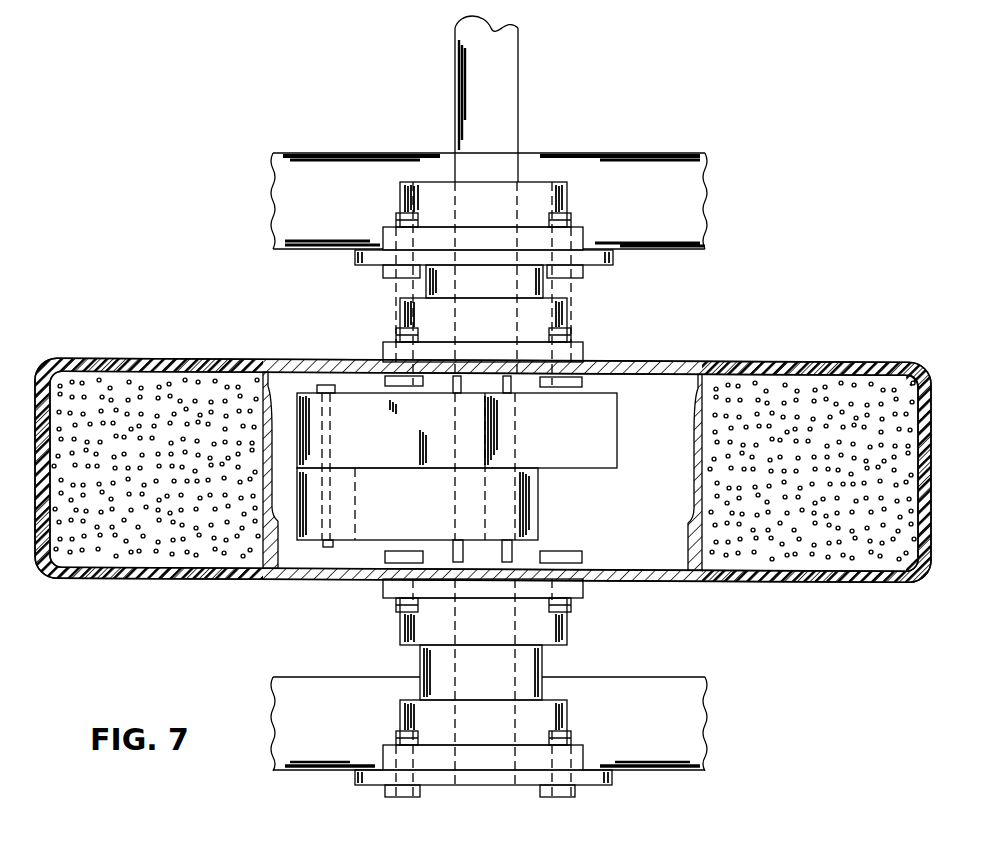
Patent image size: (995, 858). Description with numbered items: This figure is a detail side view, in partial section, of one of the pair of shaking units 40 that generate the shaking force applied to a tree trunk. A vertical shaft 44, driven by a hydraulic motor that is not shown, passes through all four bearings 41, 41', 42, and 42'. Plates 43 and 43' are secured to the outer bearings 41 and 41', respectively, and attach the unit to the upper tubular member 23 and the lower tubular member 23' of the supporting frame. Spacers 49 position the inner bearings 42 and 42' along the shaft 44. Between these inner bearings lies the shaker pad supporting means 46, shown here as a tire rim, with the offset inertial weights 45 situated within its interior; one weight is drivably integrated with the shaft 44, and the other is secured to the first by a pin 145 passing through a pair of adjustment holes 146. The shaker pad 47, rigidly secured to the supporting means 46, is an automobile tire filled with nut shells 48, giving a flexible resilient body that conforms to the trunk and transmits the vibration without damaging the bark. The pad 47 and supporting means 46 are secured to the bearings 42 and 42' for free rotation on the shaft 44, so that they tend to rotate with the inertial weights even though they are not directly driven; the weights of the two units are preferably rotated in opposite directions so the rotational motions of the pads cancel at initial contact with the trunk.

The shaking unit 40 is at (404, 200).
The shaft 44 is at (516, 68).
The bearing 41 is at (501, 280).
The upper tubular member 23 is at (481, 217).
The plate 43 is at (466, 265).
The spacer 49 is at (426, 288).
The bearing 42 is at (499, 329).
The offset inertial weight 45 is at (540, 475).
The adjustment hole 146 is at (330, 405).
The pin 145 is at (330, 547).
The shaker pad supporting means 46 is at (672, 580).
The shaker pad 47 is at (790, 581).
The nut shells 48 is at (840, 572).
The bearing 42' is at (501, 682).
The bearing 41' is at (504, 748).
The lower tubular member 23' is at (484, 739).
The plate 43' is at (470, 789).